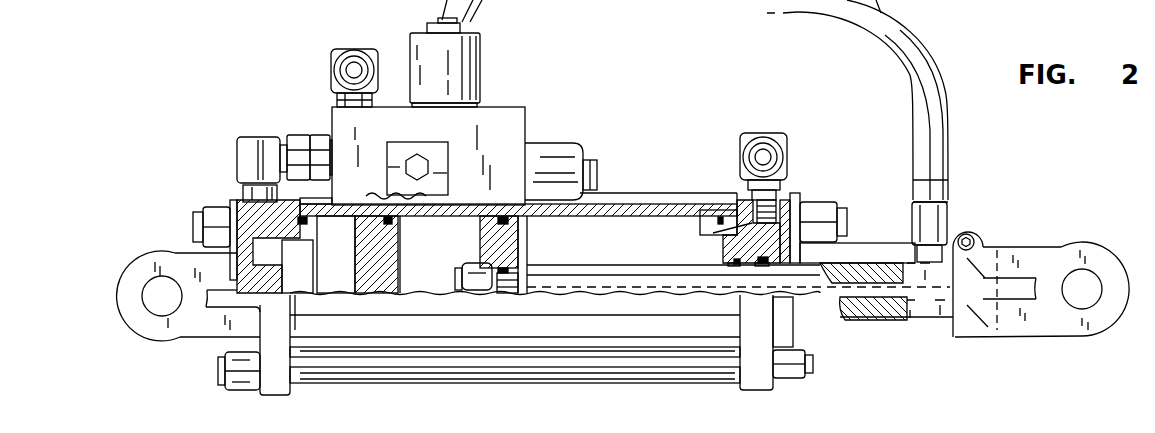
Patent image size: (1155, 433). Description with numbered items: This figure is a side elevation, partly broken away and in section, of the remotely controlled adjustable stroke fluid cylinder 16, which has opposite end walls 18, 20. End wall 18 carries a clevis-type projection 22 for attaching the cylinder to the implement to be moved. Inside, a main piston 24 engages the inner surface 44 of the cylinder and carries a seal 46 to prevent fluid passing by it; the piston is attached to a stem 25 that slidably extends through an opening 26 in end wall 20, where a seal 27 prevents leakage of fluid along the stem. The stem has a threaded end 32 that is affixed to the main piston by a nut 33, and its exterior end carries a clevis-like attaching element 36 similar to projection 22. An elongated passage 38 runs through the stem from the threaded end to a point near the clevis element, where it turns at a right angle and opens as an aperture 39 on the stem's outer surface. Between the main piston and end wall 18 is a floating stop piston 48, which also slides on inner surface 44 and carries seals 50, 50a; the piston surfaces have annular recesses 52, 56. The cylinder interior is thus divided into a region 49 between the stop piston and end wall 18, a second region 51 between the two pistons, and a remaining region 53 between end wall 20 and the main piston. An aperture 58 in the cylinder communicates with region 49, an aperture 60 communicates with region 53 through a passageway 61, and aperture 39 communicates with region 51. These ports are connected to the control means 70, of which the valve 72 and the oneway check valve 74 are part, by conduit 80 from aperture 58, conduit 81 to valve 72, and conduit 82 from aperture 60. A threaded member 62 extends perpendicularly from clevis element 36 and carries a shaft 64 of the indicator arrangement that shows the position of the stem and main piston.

The adjustable stroke fluid cylinder 16 is at (657, 187).
The end wall 18 is at (233, 200).
The end wall 20 is at (770, 212).
The clevis-type projection 22 is at (127, 323).
The main piston 24 is at (520, 242).
The stem 25 is at (690, 282).
The opening 26 is at (735, 266).
The seal 27 is at (763, 266).
The threaded end 32 is at (457, 283).
The nut 33 is at (477, 290).
The clevis-like attaching element 36 is at (1082, 250).
The elongated passage 38 is at (580, 287).
The aperture 39 is at (900, 300).
The inner surface 44 is at (630, 217).
The seal 46 is at (503, 217).
The floating stop piston 48 is at (363, 283).
The region 49 is at (330, 285).
The seal 50 is at (388, 227).
The seal 50a is at (355, 245).
The region 51 is at (408, 212).
The annular recess 52 is at (492, 252).
The region 53 is at (663, 230).
The annular recess 56 is at (385, 271).
The aperture 58 is at (248, 185).
The aperture 60 is at (752, 196).
The passageway 61 is at (732, 238).
The threaded member 62 is at (974, 234).
The shaft 64 is at (880, 243).
The control means 70 is at (531, 99).
The valve 72 is at (473, 57).
The oneway check valve 74 is at (577, 143).
The conduit 80 is at (247, 137).
The conduit 81 is at (331, 57).
The conduit 82 is at (767, 133).